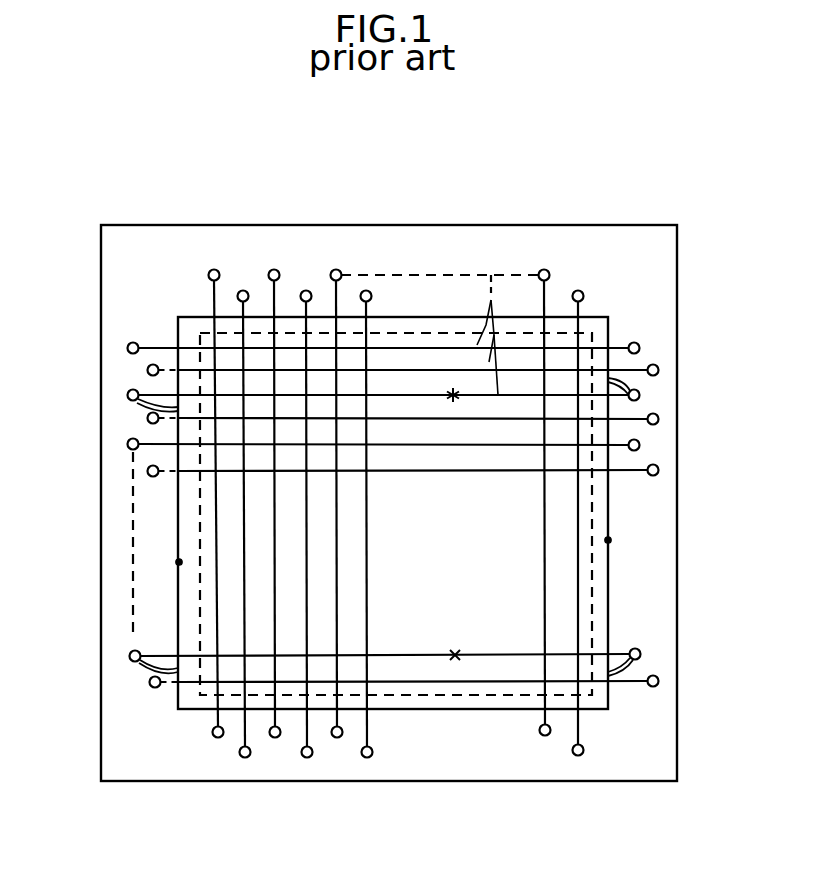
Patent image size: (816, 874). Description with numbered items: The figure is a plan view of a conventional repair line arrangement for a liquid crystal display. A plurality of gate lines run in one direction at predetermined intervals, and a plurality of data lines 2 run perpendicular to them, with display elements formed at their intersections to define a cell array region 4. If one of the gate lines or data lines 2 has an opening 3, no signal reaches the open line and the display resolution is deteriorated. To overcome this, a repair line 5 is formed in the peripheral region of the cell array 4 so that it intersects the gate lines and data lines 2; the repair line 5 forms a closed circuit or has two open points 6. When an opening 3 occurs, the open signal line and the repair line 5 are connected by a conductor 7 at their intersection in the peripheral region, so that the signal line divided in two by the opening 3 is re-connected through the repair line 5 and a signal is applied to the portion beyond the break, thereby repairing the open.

The data lines 2 is at (275, 610).
The opening 3 is at (453, 389).
The cell array region 4 is at (597, 570).
The repair line 5 is at (608, 493).
The open points 6 is at (608, 540).
The conductor 7 is at (628, 392).